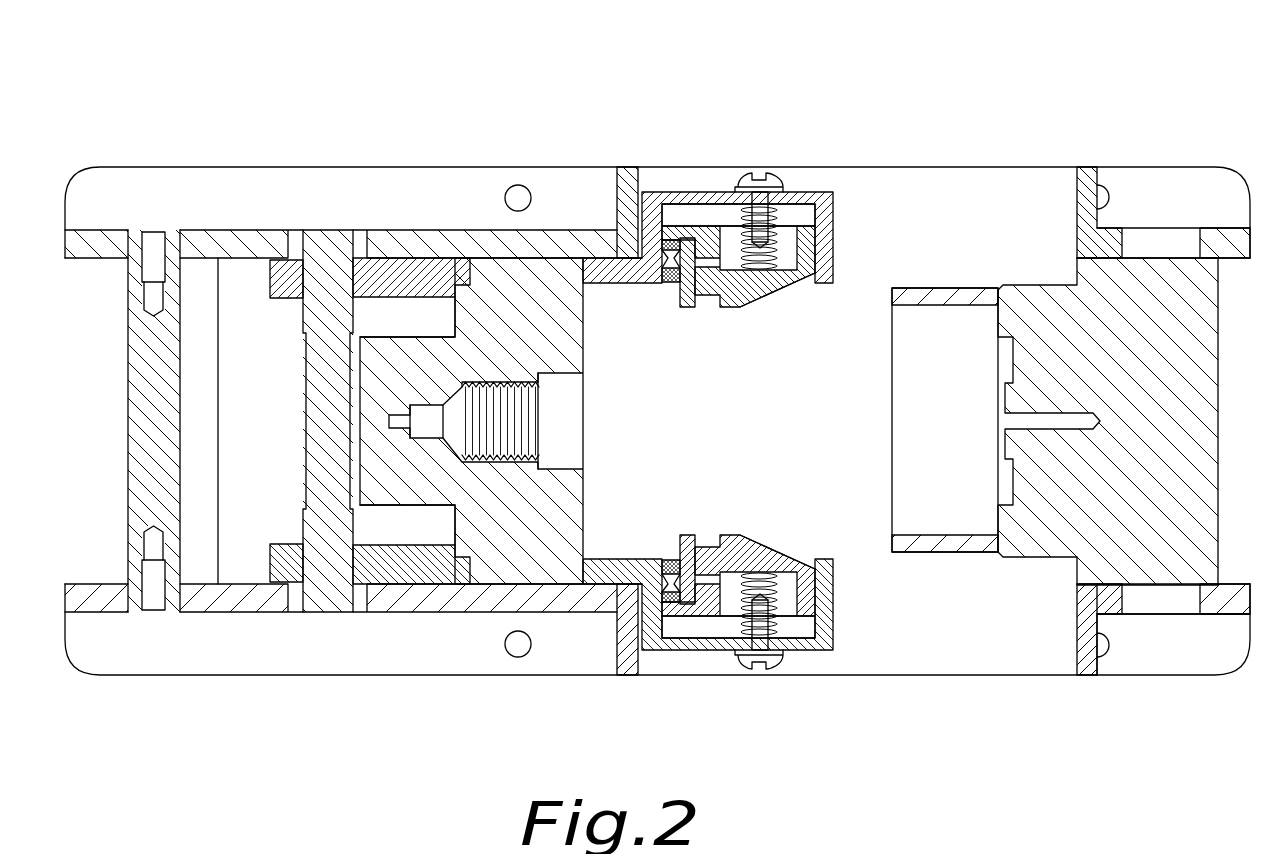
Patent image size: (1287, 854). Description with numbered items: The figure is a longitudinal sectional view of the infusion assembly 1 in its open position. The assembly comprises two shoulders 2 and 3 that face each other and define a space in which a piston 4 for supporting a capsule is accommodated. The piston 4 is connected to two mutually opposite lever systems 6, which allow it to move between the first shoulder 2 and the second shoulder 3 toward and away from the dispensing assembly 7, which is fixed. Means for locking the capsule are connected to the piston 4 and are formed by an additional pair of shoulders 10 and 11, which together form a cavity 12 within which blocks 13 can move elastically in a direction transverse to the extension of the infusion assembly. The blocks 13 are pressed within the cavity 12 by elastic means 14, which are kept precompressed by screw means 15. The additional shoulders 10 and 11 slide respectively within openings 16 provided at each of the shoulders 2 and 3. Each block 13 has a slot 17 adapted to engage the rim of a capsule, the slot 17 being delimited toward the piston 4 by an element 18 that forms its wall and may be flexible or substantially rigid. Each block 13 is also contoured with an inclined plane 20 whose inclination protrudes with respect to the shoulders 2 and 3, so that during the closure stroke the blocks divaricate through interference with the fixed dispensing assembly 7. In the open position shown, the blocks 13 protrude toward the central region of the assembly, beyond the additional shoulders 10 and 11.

The infusion assembly 1 is at (1020, 133).
The first shoulder 2 is at (215, 617).
The second shoulder 3 is at (213, 232).
The piston 4 is at (505, 298).
The lever systems 6 is at (398, 280).
The dispensing assembly 7 is at (1178, 435).
The additional shoulder 10 is at (640, 566).
The additional shoulder 11 is at (652, 218).
The cavity 12 is at (705, 215).
The blocks 13 is at (738, 292).
The elastic means 14 is at (773, 588).
The screw means 15 is at (773, 672).
The openings 16 is at (1027, 618).
The slot 17 is at (708, 297).
The element 18 is at (680, 298).
The inclined plane 20 is at (780, 287).